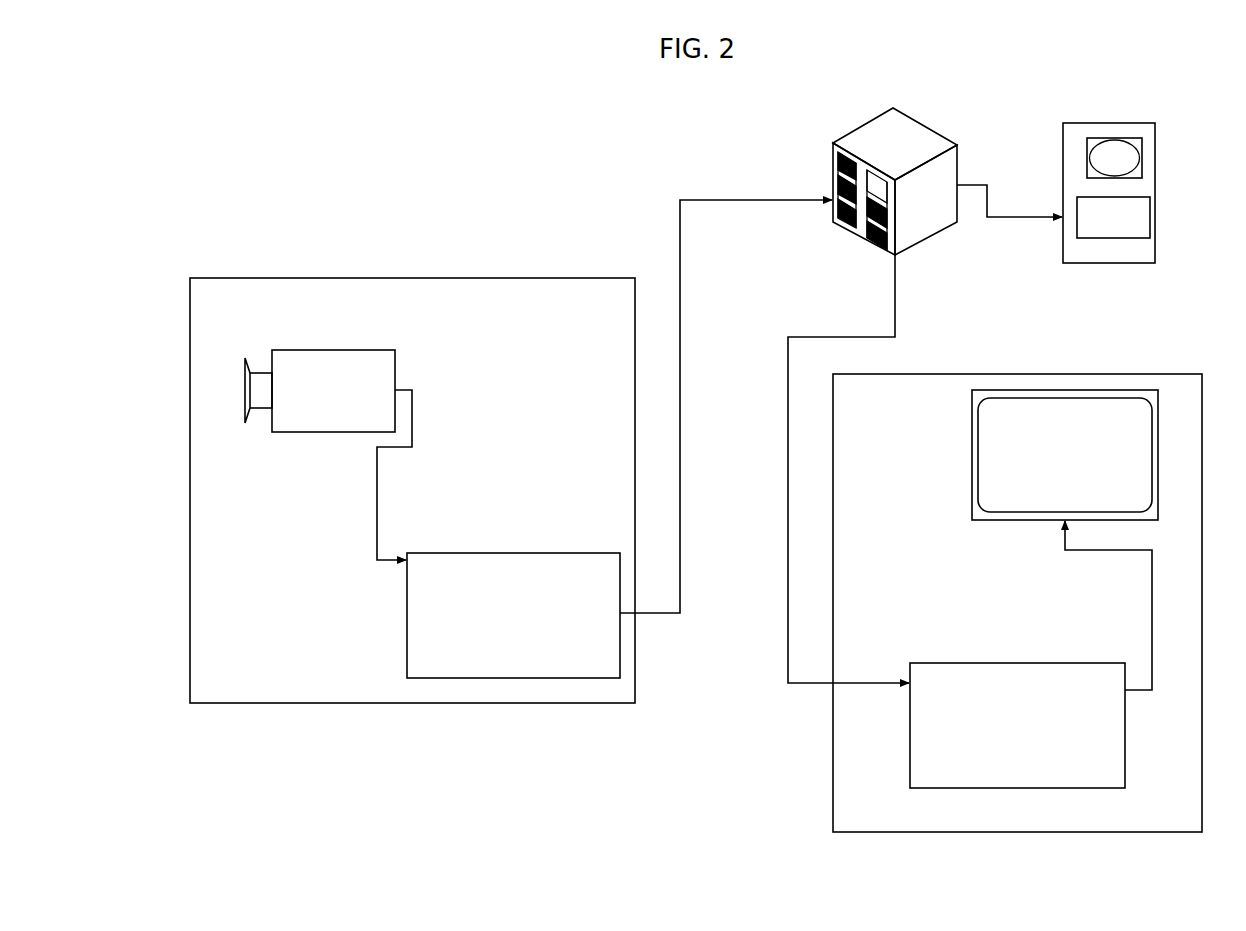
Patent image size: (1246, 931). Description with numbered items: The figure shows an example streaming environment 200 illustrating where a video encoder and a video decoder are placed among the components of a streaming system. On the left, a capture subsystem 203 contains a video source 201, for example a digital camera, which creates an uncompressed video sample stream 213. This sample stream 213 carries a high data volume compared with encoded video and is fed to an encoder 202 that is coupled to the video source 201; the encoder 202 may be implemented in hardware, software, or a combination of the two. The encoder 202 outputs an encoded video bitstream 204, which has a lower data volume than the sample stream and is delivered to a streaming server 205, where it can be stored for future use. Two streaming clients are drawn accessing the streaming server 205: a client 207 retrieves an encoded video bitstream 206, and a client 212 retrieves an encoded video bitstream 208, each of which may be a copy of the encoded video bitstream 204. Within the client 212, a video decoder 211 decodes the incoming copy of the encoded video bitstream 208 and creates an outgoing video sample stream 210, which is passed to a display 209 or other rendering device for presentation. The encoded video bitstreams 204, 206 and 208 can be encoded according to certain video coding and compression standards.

The streaming environment 200 is at (226, 147).
The video source 201 is at (330, 350).
The encoder 202 is at (525, 553).
The capture subsystem 203 is at (400, 704).
The encoded video bitstream 204 is at (678, 228).
The streaming server 205 is at (833, 163).
The encoded video bitstream 206 is at (1020, 218).
The streaming client 207 is at (1156, 151).
The encoded video bitstream 208 is at (787, 521).
The display 209 is at (970, 445).
The outgoing video sample stream 210 is at (1150, 622).
The video decoder 211 is at (908, 755).
The streaming client 212 is at (832, 770).
The uncompressed video sample stream 213 is at (377, 517).